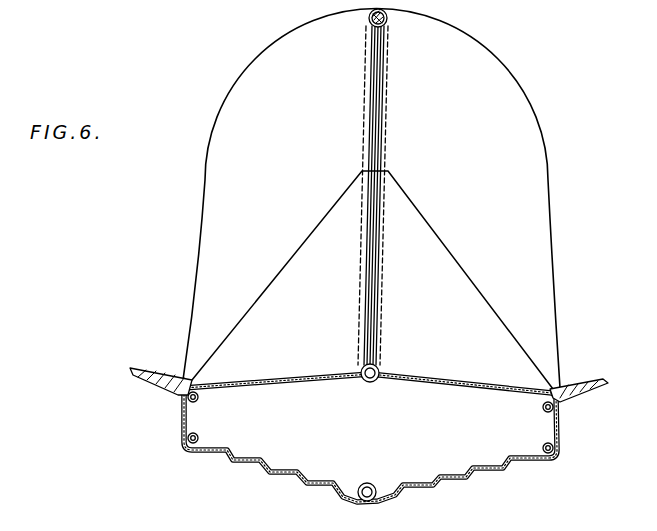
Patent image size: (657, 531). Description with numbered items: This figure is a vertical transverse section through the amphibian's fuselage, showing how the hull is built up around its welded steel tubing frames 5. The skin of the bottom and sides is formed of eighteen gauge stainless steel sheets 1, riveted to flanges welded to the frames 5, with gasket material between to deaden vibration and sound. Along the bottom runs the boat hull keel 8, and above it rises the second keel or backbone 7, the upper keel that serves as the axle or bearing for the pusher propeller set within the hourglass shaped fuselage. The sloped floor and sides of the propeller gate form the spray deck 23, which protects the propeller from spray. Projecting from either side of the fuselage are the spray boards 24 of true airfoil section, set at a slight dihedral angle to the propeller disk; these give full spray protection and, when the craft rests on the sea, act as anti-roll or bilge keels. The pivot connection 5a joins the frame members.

The stainless steel sheets 1 is at (553, 242).
The second keel or backbone 7 is at (370, 23).
The spray deck 23 is at (372, 280).
The spray boards 24 is at (149, 380).
The central pivot 5a is at (383, 365).
The steel tubing frames 5 is at (375, 483).
The boat hull keel 8 is at (472, 472).